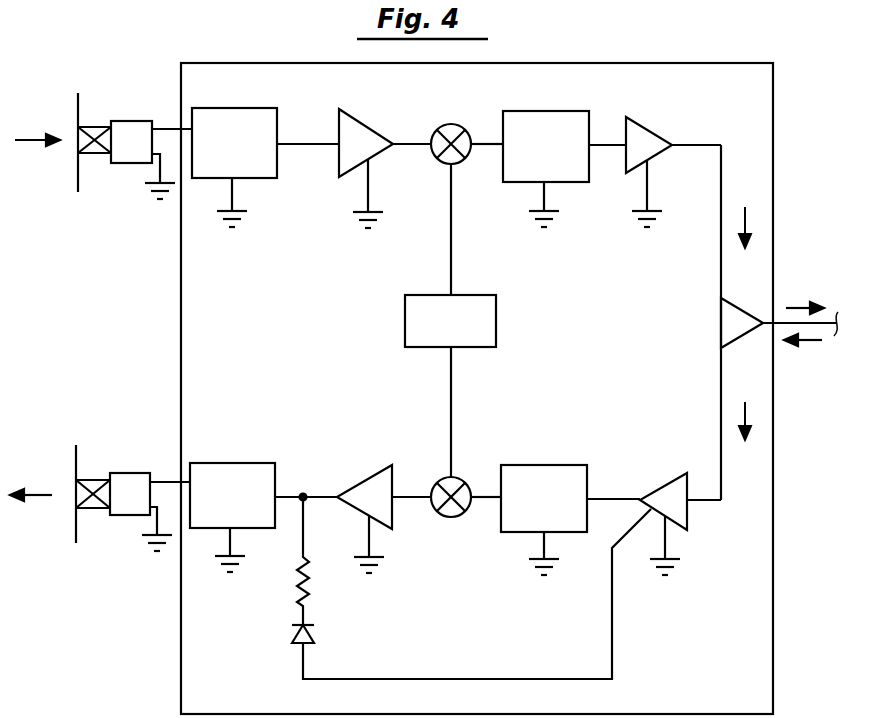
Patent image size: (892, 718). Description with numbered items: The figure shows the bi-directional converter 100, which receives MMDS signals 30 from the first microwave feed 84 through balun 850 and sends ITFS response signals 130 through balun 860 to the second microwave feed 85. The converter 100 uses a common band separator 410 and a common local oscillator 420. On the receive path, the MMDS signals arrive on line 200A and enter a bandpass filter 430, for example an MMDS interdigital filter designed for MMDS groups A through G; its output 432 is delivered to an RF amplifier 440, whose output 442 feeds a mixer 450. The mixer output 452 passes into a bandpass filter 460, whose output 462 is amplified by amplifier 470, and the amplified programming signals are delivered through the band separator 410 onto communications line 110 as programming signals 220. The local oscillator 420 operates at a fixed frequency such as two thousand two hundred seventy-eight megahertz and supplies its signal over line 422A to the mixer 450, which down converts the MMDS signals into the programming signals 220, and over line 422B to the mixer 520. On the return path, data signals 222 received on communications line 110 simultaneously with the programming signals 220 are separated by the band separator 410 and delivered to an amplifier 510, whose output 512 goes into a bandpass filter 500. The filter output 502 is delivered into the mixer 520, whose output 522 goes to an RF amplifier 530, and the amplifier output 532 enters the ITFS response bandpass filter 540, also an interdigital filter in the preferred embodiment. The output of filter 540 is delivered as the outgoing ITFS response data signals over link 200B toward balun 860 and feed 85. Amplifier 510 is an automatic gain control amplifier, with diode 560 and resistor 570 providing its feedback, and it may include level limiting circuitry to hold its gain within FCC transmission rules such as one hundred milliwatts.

The bi-directional converter 100 is at (633, 63).
The MMDS signals 30 is at (38, 150).
The first microwave feed 84 is at (78, 104).
The balun 850 is at (128, 163).
The line 200A is at (166, 129).
The bandpass filter 430 is at (255, 178).
The filter output line 432 is at (306, 142).
The RF amplifier 440 is at (368, 120).
The amplifier output line 442 is at (408, 148).
The mixer 450 is at (440, 123).
The mixer output line 452 is at (484, 148).
The bandpass filter 460 is at (548, 111).
The filter output line 462 is at (608, 150).
The amplifier 470 is at (648, 127).
The band separator 410 is at (721, 323).
The communications line 110 is at (836, 326).
The programming signals 220 is at (795, 305).
The data signals 222 is at (805, 352).
The local oscillator 420 is at (496, 320).
The local oscillator output line 422A is at (452, 272).
The local oscillator output line 422B is at (452, 392).
The ITFS response signals 130 is at (45, 500).
The second microwave feed 85 is at (76, 458).
The balun 860 is at (128, 515).
The link 200B is at (163, 482).
The ITFS response bandpass filter 540 is at (240, 463).
The amplifier output line 532 is at (323, 494).
The RF amplifier 530 is at (370, 478).
The mixer output line 522 is at (412, 493).
The mixer 520 is at (440, 516).
The filter output line 502 is at (487, 493).
The bandpass filter 500 is at (544, 465).
The amplifier output line 512 is at (632, 497).
The amplifier 510 is at (690, 506).
The resistor 570 is at (298, 573).
The diode 560 is at (314, 640).